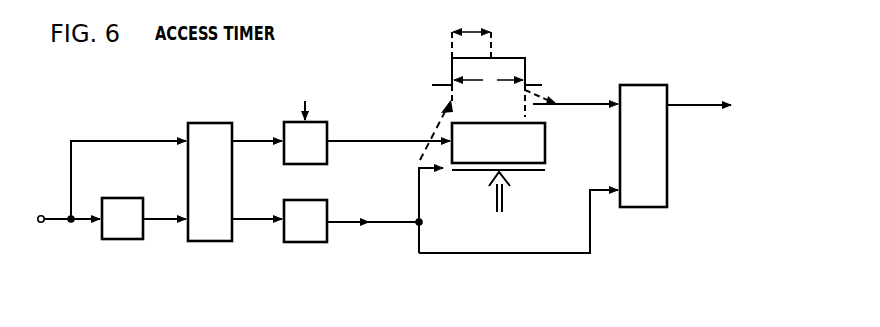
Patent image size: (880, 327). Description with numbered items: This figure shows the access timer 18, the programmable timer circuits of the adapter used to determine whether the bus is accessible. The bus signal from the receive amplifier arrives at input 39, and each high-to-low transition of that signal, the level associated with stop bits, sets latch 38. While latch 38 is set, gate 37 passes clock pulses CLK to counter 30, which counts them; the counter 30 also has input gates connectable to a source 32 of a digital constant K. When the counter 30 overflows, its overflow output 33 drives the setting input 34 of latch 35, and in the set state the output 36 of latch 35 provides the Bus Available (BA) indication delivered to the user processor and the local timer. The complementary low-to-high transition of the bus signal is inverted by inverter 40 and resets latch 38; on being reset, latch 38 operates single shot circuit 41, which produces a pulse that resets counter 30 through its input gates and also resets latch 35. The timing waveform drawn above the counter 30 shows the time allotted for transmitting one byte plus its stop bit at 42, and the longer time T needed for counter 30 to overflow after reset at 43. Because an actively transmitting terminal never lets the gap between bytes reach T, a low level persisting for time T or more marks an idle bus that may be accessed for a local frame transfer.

The access timer 18 is at (197, 81).
The counter 30 is at (454, 133).
The source of a digital constant K 32 is at (505, 192).
The overflow output 33 is at (573, 104).
The setting input 34 is at (538, 171).
The latch 35 is at (650, 207).
The output 36 is at (690, 107).
The gate 37 is at (287, 134).
The latch 38 is at (207, 242).
The bus signal input 39 is at (41, 214).
The inverter 40 is at (123, 240).
The single shot circuit 41 is at (307, 242).
The byte transmittal time 42 is at (464, 32).
The time T 43 is at (500, 79).